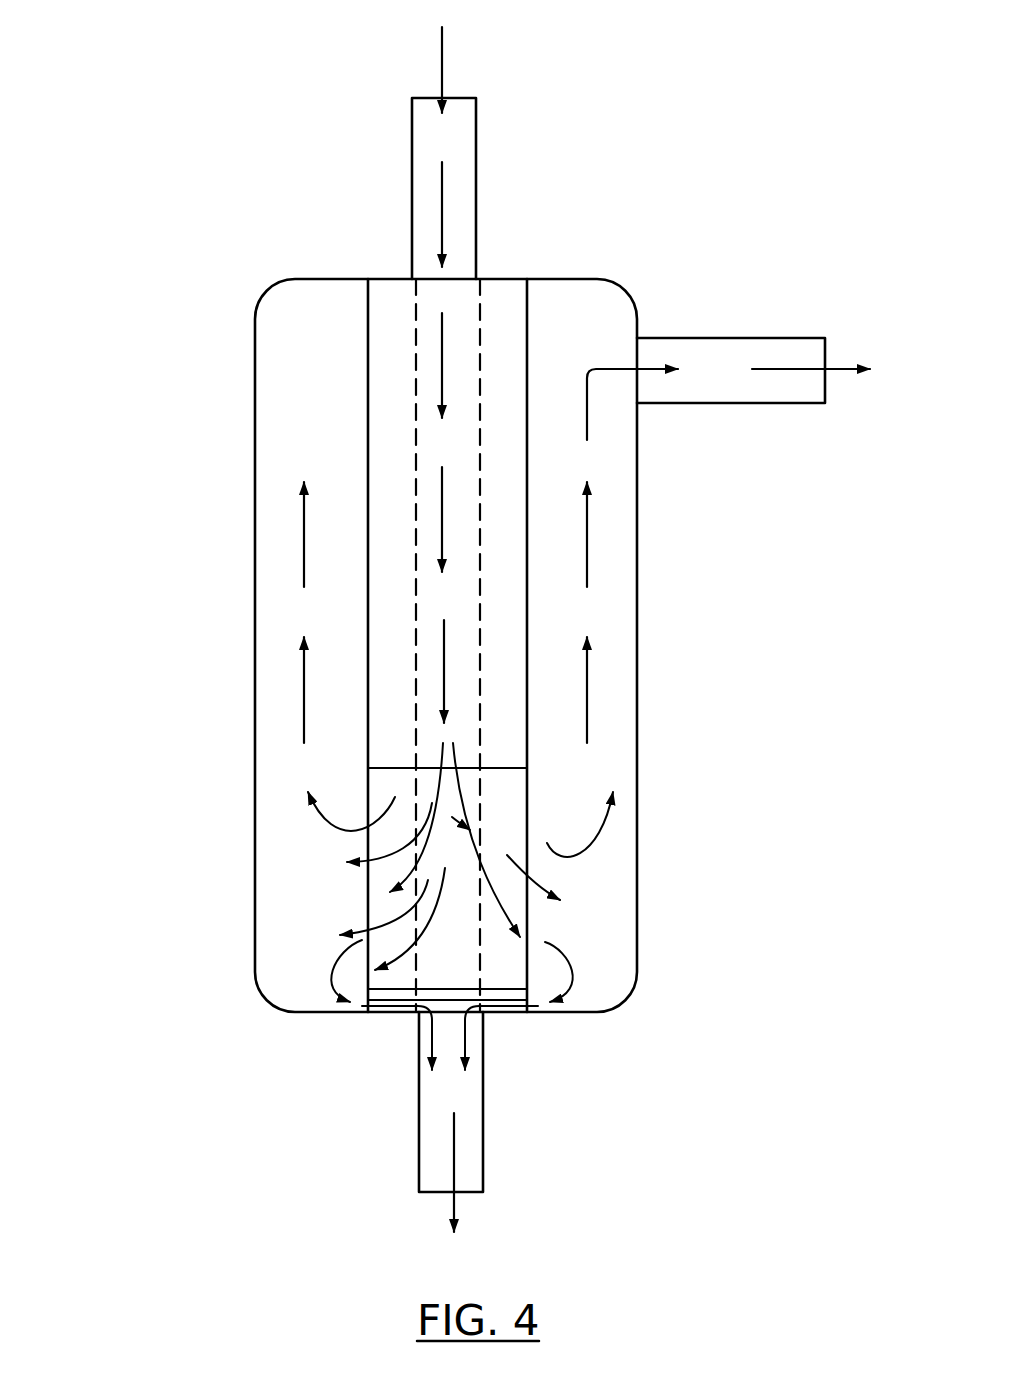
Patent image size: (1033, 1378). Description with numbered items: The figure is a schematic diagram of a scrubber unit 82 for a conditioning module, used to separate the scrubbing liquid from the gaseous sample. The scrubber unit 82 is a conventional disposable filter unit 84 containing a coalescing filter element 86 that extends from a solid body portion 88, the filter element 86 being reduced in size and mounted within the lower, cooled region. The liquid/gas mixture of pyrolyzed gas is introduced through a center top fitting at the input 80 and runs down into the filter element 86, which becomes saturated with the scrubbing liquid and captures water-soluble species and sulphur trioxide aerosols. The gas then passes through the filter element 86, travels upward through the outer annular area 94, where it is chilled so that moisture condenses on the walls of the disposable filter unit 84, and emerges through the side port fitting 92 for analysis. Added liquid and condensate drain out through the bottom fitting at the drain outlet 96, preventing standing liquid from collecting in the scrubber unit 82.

The input 80 is at (440, 60).
The scrubber unit 82 is at (215, 218).
The disposable filter unit 84 is at (254, 445).
The coalescing filter element 86 is at (508, 810).
The solid body portion 88 is at (508, 623).
The side port fitting 92 is at (837, 368).
The outer annular area 94 is at (280, 642).
The drain outlet 96 is at (454, 1205).